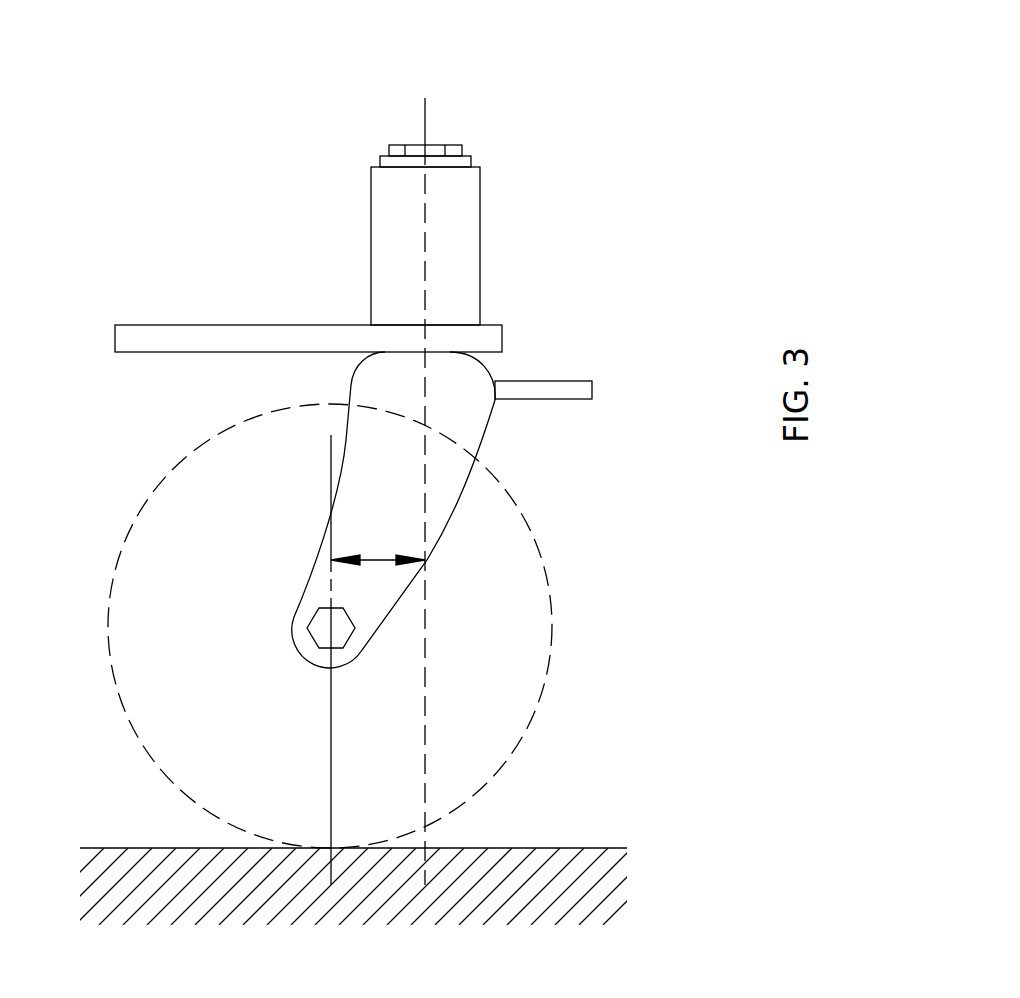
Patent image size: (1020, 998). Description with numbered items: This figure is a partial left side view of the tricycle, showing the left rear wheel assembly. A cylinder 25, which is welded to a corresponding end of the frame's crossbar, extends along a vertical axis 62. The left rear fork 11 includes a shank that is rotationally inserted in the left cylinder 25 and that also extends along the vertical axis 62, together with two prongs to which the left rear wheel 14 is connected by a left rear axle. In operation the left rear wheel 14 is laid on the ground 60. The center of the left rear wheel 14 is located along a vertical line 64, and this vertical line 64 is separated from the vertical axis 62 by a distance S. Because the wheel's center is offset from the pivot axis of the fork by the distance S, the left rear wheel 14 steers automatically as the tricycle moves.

The vertical axis 62 is at (425, 122).
The cylinder 25 is at (455, 212).
The left rear fork 11 is at (435, 508).
The vertical line 64 is at (331, 765).
The distance S is at (385, 563).
The left rear wheel 14 is at (537, 712).
The ground 60 is at (560, 848).